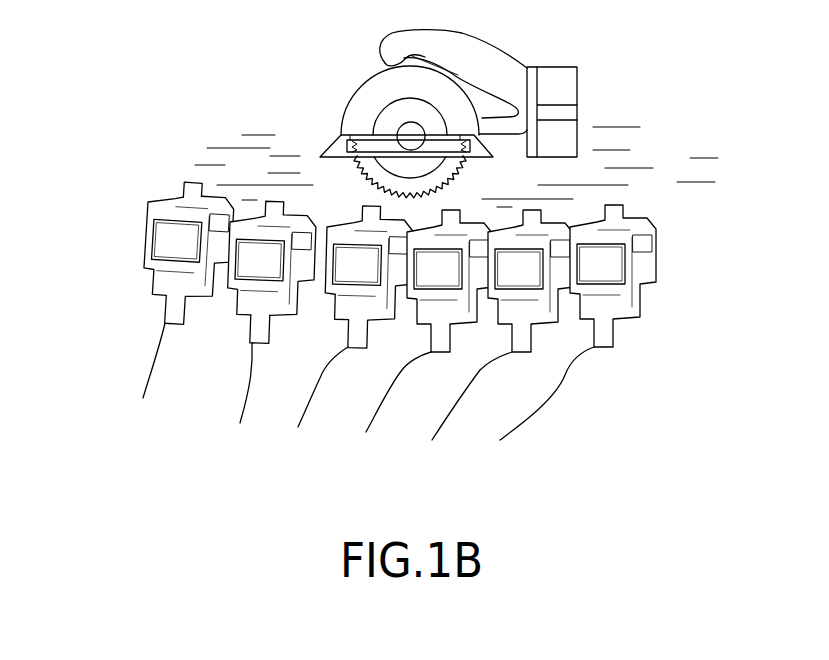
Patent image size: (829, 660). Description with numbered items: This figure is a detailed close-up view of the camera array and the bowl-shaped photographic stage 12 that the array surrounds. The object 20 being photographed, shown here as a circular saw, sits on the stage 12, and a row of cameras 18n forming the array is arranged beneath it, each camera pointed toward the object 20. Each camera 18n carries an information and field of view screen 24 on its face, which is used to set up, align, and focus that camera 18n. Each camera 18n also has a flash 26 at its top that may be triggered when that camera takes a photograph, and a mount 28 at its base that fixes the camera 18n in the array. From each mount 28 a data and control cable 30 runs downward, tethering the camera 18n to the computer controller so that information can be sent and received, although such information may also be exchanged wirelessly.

The bowl-shaped photographic stage 12 is at (615, 140).
The object 20 is at (390, 124).
The camera 18n is at (217, 247).
The information and field of view screen 24 is at (170, 240).
The flash 26 is at (187, 190).
The mount 28 is at (258, 323).
The data and control cable 30 is at (525, 418).